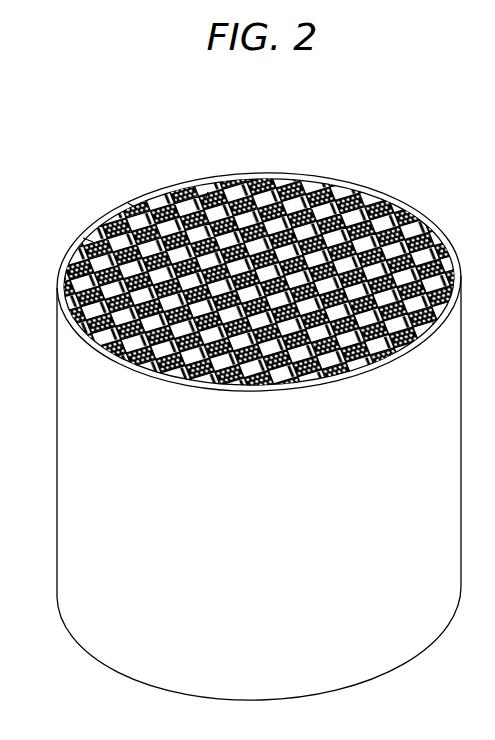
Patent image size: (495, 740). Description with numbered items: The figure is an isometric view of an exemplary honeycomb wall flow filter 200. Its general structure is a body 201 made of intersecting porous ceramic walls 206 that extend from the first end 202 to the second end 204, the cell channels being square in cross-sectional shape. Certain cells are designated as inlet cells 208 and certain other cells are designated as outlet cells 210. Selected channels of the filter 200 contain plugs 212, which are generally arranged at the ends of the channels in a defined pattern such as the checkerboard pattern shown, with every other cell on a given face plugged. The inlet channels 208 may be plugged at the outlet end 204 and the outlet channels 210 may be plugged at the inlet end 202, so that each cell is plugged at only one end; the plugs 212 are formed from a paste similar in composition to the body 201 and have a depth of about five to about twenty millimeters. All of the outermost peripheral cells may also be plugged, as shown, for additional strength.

The honeycomb wall flow filter 200 is at (389, 177).
The body 201 is at (84, 238).
The first end 202 is at (420, 211).
The second end 204 is at (362, 684).
The porous ceramic walls 206 is at (316, 183).
The inlet cells 208 is at (173, 196).
The outlet cells 210 is at (129, 204).
The plugs 212 is at (208, 192).